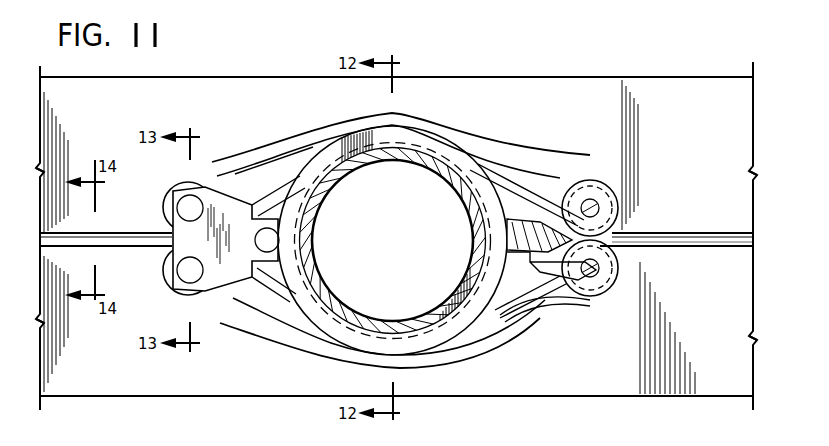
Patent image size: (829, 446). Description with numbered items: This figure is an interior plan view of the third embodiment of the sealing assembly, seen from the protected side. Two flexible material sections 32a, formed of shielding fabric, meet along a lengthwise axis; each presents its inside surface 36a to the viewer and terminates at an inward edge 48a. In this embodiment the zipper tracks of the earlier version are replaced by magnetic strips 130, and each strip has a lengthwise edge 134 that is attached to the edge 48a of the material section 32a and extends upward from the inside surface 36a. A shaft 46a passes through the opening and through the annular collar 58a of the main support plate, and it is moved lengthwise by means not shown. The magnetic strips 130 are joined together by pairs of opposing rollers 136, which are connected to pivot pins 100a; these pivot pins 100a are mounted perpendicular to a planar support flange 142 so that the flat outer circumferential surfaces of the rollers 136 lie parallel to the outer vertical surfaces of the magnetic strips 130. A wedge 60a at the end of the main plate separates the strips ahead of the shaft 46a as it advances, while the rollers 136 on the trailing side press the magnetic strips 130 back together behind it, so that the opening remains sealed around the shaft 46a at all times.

The material section 32a is at (637, 80).
The inside surface 36a is at (633, 396).
The shaft 46a is at (460, 182).
The wedge 60a is at (550, 176).
The roller 136 is at (617, 185).
The pivot pin 100a is at (600, 212).
The lengthwise edge 134 is at (672, 249).
The magnetic strip 130 is at (668, 253).
The edge 48a is at (648, 246).
The support flange 142 is at (230, 207).
The annular collar 58a is at (492, 294).